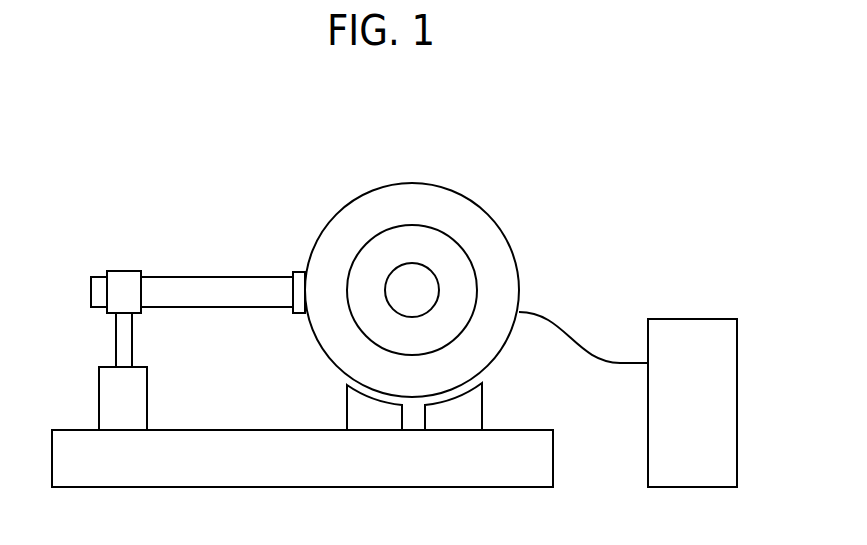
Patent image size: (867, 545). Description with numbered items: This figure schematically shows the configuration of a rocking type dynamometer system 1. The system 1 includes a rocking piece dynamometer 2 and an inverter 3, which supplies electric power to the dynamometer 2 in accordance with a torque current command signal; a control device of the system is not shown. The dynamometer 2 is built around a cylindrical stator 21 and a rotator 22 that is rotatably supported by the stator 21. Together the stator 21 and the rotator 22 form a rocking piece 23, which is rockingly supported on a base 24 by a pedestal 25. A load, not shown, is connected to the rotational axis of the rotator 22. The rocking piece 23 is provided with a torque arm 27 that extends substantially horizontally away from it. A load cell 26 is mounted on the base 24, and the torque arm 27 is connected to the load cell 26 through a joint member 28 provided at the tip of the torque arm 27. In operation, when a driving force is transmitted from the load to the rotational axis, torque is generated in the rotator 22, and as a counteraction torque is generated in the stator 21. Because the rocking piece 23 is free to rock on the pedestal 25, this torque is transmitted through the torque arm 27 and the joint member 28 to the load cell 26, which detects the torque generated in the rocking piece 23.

The rocking type dynamometer system 1 is at (643, 89).
The rocking piece dynamometer 2 is at (190, 160).
The inverter 3 is at (720, 319).
The stator 21 is at (448, 189).
The rotator 22 is at (382, 240).
The rocking piece 23 is at (431, 269).
The base 24 is at (515, 430).
The pedestal 25 is at (347, 401).
The load cell 26 is at (99, 398).
The torque arm 27 is at (233, 277).
The joint member 28 is at (116, 336).